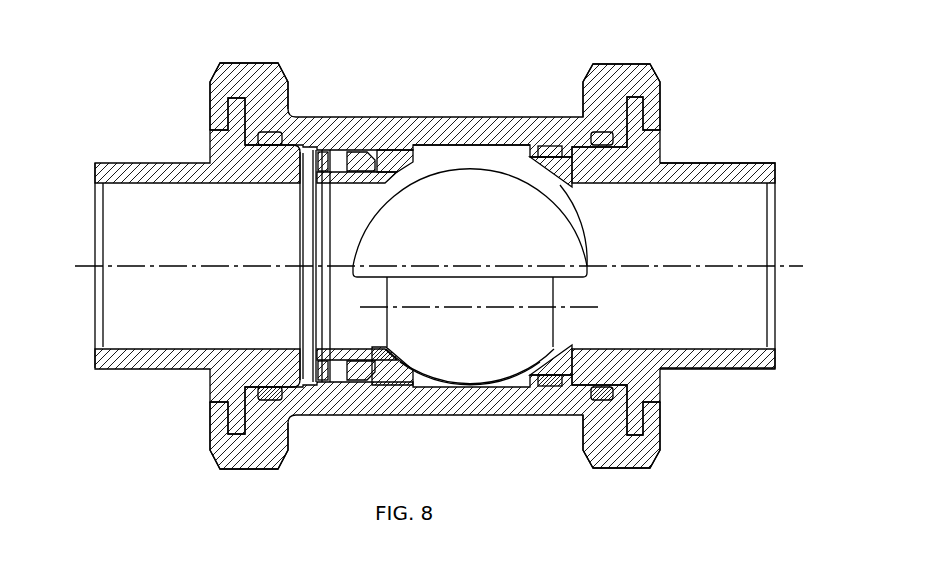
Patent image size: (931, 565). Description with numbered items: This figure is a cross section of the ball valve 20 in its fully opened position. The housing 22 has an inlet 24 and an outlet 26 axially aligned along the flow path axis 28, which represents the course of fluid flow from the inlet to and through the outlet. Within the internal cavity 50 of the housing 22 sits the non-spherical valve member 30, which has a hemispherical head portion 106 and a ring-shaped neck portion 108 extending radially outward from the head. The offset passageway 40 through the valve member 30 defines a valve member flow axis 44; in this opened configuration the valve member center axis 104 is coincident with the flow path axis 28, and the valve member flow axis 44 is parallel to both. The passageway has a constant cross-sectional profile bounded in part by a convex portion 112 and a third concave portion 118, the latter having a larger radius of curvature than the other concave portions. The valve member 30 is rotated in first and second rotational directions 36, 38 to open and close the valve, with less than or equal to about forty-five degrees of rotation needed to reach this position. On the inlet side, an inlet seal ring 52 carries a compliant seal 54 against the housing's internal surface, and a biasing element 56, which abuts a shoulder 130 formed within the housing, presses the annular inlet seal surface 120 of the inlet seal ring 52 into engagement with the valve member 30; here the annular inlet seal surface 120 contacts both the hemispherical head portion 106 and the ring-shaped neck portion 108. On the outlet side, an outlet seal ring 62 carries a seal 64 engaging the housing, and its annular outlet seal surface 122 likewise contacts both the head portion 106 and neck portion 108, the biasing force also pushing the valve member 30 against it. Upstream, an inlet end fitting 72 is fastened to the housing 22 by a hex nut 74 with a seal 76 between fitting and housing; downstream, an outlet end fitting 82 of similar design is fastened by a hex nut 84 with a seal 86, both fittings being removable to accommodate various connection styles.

The ball valve 20 is at (682, 49).
The housing 22 is at (425, 135).
The inlet 24 is at (122, 307).
The outlet 26 is at (753, 308).
The flow path axis 28 is at (792, 266).
The valve member 30 is at (358, 228).
The first rotational direction 36 is at (524, 284).
The second rotational direction 38 is at (503, 287).
The offset passageway 40 is at (410, 297).
The valve member flow axis 44 is at (380, 308).
The internal cavity 50 is at (343, 212).
The inlet seal ring 52 is at (398, 150).
The compliant seal 54 is at (362, 152).
The biasing element 56 is at (325, 152).
The outlet seal ring 62 is at (567, 168).
The seal 64 is at (543, 148).
The inlet end fitting 72 is at (134, 163).
The hex nut 74 is at (212, 74).
The seal 76 is at (266, 132).
The outlet end fitting 82 is at (752, 165).
The hex nut 84 is at (652, 91).
The seal 86 is at (603, 132).
The valve member center axis 104 is at (566, 262).
The hemispherical head portion 106 is at (462, 172).
The ring-shaped neck portion 108 is at (470, 372).
The convex portion 112 is at (548, 278).
The third concave portion 118 is at (547, 347).
The annular inlet seal surface 120 is at (405, 358).
The annular outlet seal surface 122 is at (513, 357).
The shoulder 130 is at (312, 367).